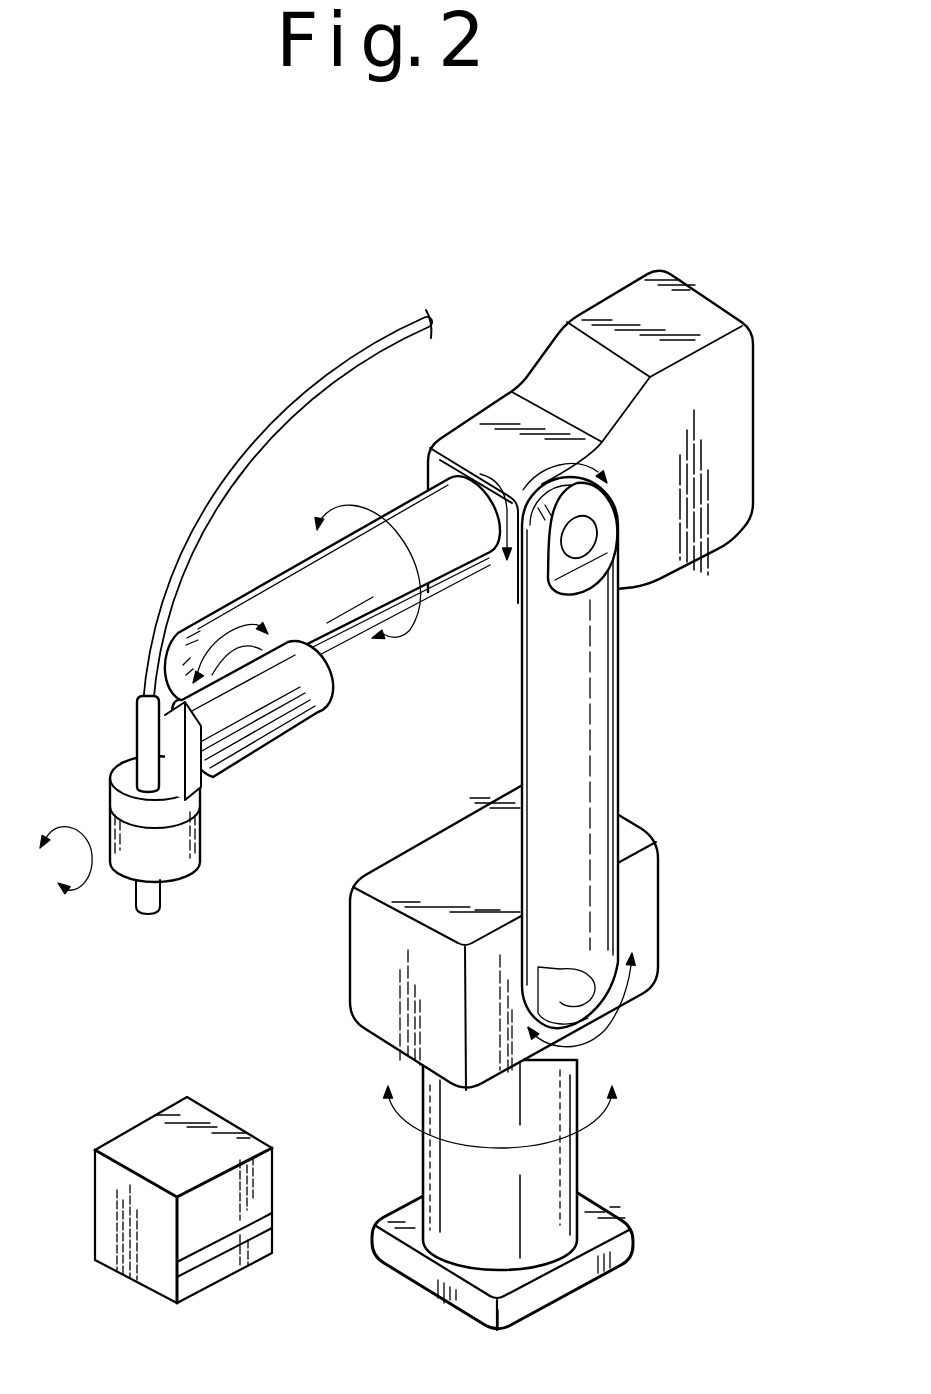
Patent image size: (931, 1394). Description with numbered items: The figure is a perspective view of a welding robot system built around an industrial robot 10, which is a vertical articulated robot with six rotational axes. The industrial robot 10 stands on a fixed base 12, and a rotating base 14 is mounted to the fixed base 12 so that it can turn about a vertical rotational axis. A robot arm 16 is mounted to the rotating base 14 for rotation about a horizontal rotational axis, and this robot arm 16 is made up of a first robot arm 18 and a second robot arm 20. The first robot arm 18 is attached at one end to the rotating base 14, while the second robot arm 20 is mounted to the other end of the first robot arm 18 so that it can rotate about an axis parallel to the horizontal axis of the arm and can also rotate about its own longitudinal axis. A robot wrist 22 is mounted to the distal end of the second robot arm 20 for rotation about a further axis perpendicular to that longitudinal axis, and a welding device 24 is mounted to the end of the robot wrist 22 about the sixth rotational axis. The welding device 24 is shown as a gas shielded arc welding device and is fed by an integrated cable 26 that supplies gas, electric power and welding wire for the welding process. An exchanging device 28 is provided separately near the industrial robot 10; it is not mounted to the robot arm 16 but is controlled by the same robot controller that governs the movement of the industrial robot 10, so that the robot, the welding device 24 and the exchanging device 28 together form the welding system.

The industrial robot 10 is at (190, 382).
The fixed base 12 is at (422, 1175).
The rotating base 14 is at (417, 840).
The robot arm 16 is at (727, 269).
The first robot arm 18 is at (620, 653).
The second robot arm 20 is at (437, 588).
The robot wrist 22 is at (260, 748).
The welding device 24 is at (100, 730).
The integrated cable 26 is at (207, 509).
The exchanging device 28 is at (135, 1117).